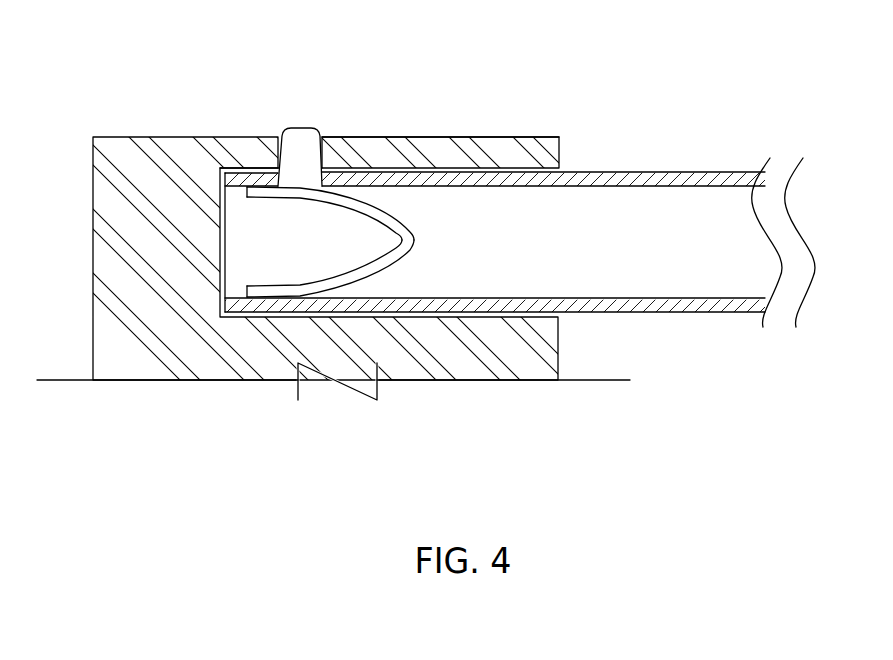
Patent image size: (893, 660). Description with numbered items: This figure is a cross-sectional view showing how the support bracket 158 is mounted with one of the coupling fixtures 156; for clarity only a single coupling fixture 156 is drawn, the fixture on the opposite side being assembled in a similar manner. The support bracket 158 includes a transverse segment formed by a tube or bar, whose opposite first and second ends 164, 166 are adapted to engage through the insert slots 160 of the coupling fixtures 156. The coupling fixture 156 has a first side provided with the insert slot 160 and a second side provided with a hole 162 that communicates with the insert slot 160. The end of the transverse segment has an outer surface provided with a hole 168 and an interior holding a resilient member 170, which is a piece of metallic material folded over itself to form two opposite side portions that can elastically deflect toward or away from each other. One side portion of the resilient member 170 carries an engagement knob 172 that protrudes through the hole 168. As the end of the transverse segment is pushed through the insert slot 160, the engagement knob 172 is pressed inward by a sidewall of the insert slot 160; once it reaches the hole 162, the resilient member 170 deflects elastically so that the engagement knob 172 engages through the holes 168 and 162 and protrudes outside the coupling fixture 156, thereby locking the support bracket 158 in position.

The coupling fixture 156 is at (462, 137).
The support bracket 158 is at (683, 338).
The insert slot 160 is at (521, 137).
The hole 162 is at (280, 137).
The first end 164 is at (660, 172).
The second end 166 is at (489, 309).
The hole 168 is at (385, 194).
The resilient member 170 is at (402, 263).
The engagement knob 172 is at (300, 134).